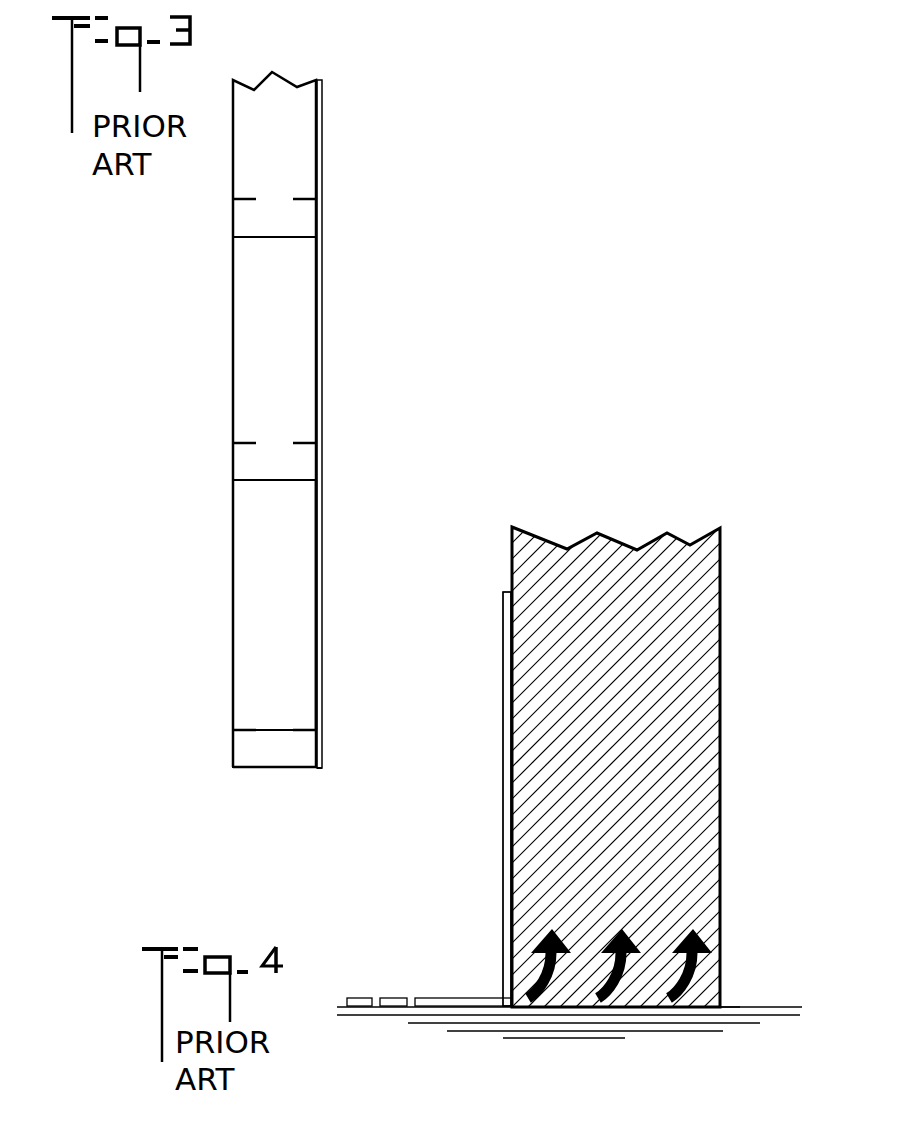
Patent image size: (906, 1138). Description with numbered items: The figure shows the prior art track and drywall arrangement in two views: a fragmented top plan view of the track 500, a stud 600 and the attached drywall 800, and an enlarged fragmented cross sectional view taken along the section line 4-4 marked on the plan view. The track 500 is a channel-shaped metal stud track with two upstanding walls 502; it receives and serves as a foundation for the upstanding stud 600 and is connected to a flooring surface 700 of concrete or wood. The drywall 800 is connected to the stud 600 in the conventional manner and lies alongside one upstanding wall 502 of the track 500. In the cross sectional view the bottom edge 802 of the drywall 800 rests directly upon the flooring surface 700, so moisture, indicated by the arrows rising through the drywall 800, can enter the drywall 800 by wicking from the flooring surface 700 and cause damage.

In FIG. 3, the track 500 is at (214, 311).
In FIG. 4, the track 500 is at (439, 972).
In FIG. 3, the upstanding wall 502 is at (317, 547).
In FIG. 4, the upstanding wall 502 is at (508, 718).
In FIG. 3, the stud 600 is at (247, 730).
In FIG. 4, the flooring surface 700 is at (492, 1033).
In FIG. 3, the drywall 800 is at (323, 235).
In FIG. 4, the drywall 800 is at (745, 572).
In FIG. 3, the bottom edge 802 is at (320, 768).
In FIG. 4, the bottom edge 802 is at (680, 1008).
In FIG. 3, the section line 4- 4 is at (342, 405).